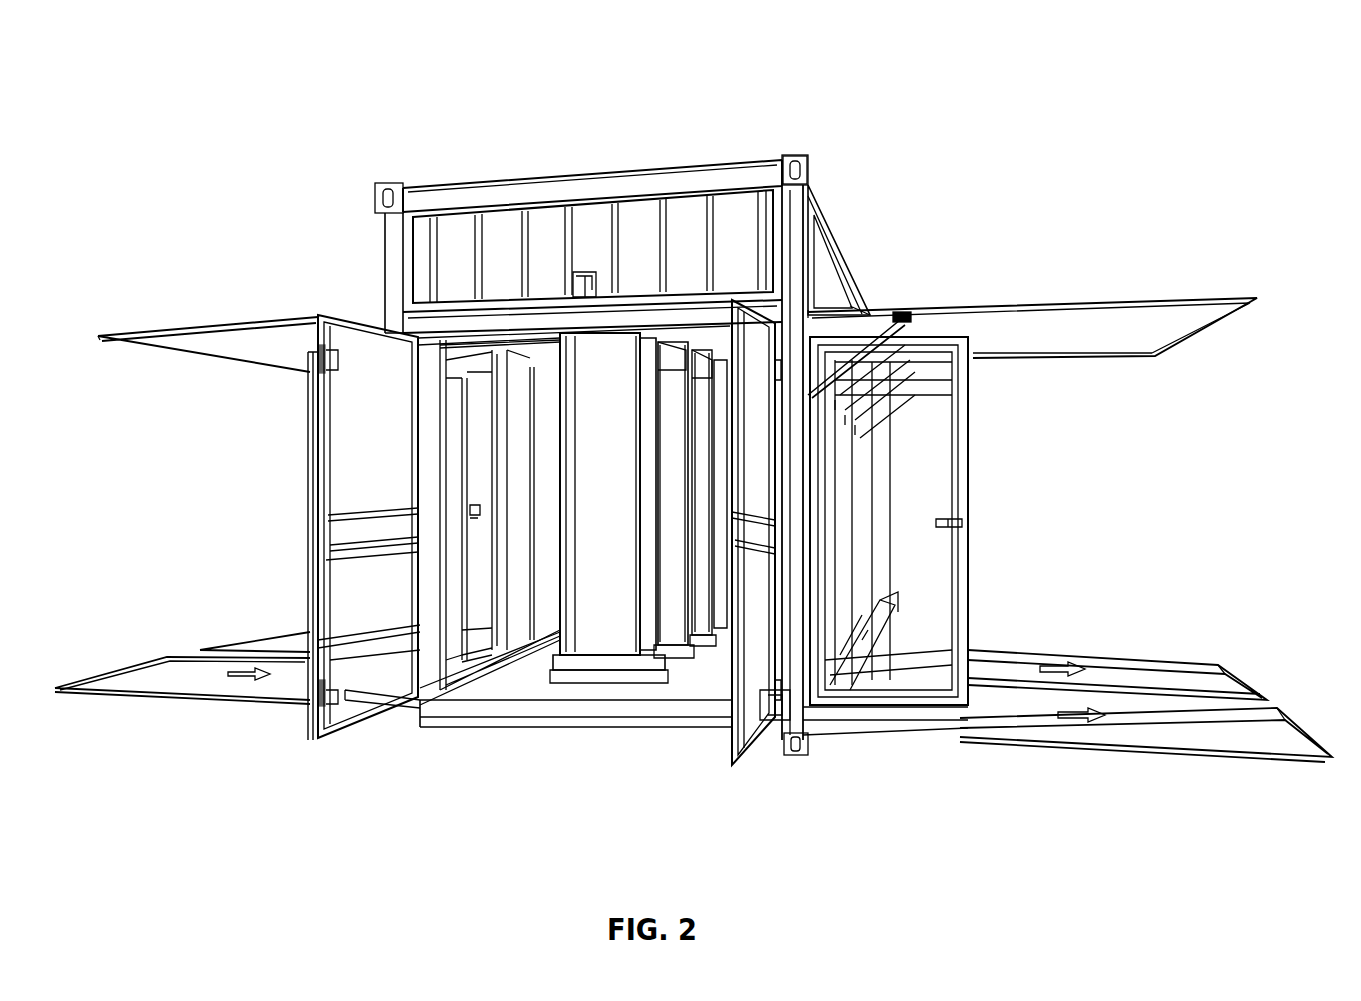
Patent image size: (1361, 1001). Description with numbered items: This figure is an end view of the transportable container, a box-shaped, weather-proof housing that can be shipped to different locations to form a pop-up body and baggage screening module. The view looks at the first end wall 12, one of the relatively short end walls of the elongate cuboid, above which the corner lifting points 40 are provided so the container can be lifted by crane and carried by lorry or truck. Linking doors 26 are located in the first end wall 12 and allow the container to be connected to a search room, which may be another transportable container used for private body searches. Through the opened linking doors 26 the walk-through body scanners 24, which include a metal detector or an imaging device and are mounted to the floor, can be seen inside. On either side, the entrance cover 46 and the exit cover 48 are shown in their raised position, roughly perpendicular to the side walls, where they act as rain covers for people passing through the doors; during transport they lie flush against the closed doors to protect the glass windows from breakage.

The first end wall 12 is at (525, 243).
The corner lifting points 40 is at (808, 165).
The entrance cover 46 is at (240, 345).
The exit cover 48 is at (1093, 340).
The linking doors 26 is at (368, 677).
The body scanners 24 is at (620, 617).